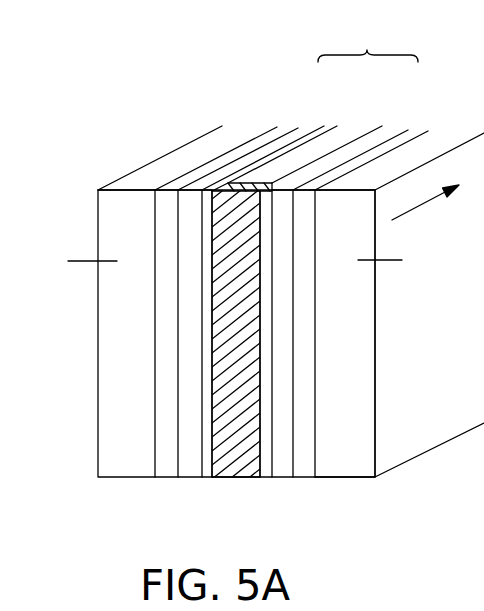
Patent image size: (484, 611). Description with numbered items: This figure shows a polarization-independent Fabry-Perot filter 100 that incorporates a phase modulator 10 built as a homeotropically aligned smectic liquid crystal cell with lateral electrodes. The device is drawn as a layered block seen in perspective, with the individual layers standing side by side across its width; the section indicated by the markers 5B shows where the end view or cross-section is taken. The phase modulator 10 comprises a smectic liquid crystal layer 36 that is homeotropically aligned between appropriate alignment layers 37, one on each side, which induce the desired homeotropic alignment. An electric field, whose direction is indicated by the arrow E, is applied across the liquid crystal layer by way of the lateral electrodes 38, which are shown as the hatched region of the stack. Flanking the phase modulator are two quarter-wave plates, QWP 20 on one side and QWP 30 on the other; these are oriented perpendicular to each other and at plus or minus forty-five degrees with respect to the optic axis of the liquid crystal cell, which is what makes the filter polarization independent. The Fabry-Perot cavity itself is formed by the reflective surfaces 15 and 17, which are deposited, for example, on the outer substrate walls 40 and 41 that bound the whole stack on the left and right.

The polarization-independent FP filter 100 is at (101, 88).
The phase modulator 10 is at (380, 44).
The alignment layers 37 is at (316, 135).
The smectic liquid crystal layer 36 is at (348, 140).
The substrate wall 40 is at (133, 477).
The reflective surface 15 is at (175, 477).
The QWP 20 is at (187, 477).
The lateral electrodes 38 is at (232, 477).
The QWP 30 is at (277, 477).
The reflective surface 17 is at (307, 477).
The substrate wall 41 is at (343, 477).
The section line 5B- 5B is at (233, 261).
The direction of electric field E is at (425, 210).